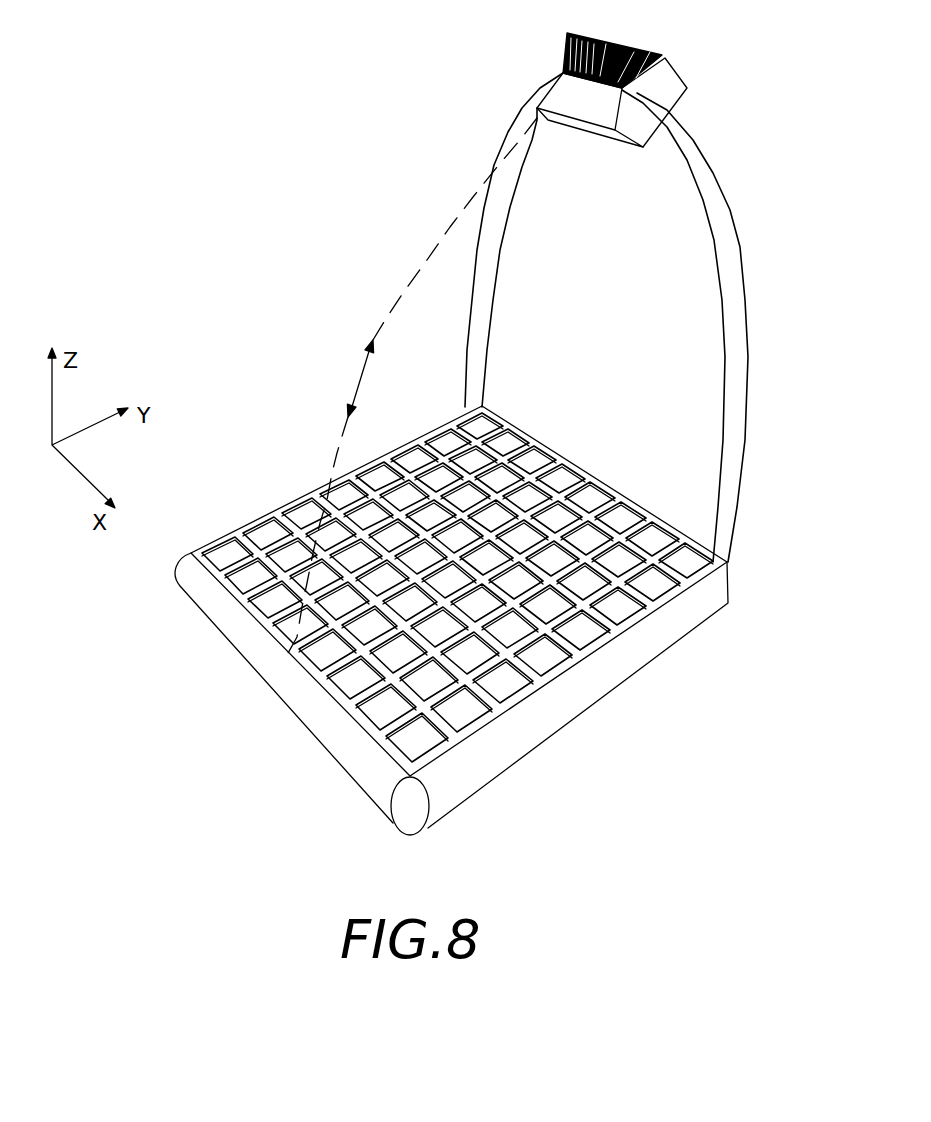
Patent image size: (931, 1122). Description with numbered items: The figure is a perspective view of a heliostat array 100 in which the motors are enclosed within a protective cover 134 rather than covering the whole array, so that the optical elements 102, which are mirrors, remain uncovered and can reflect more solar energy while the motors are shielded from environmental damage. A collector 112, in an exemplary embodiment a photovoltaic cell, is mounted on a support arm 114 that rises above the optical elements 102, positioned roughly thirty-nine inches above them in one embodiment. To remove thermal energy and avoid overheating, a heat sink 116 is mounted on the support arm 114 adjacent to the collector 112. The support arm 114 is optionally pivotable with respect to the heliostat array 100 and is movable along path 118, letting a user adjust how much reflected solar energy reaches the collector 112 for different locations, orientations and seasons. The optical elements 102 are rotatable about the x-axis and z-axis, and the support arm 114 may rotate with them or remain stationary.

The heliostat array 100 is at (193, 284).
The optical elements 102 is at (277, 557).
The collector 112 is at (589, 127).
The support arm 114 is at (692, 157).
The heat sink 116 is at (565, 53).
The path 118 is at (357, 387).
The protective cover 134 is at (570, 692).